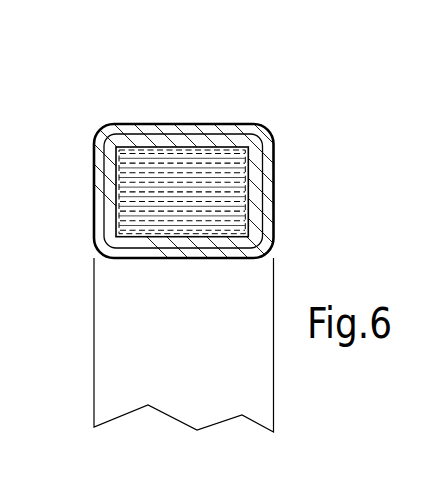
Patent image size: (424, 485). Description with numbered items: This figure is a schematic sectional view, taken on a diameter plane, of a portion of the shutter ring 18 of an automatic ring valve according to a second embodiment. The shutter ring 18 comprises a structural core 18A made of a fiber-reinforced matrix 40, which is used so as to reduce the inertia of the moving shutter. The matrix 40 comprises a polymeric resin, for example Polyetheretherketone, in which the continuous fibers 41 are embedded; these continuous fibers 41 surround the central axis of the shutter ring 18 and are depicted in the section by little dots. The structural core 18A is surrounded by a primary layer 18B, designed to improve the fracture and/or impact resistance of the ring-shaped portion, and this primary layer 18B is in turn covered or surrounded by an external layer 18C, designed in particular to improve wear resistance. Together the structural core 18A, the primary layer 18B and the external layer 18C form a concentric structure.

The shutter ring 18 is at (200, 117).
The structural core 18A is at (158, 147).
The primary layer 18B is at (255, 200).
The external layer 18C is at (100, 170).
The fiber-reinforced matrix 40 is at (210, 178).
The continuous fibers 41 is at (162, 185).